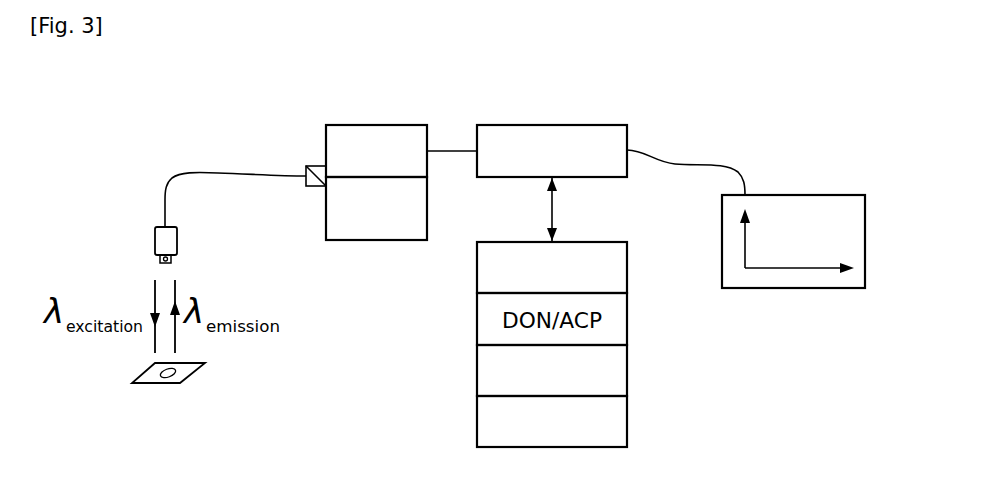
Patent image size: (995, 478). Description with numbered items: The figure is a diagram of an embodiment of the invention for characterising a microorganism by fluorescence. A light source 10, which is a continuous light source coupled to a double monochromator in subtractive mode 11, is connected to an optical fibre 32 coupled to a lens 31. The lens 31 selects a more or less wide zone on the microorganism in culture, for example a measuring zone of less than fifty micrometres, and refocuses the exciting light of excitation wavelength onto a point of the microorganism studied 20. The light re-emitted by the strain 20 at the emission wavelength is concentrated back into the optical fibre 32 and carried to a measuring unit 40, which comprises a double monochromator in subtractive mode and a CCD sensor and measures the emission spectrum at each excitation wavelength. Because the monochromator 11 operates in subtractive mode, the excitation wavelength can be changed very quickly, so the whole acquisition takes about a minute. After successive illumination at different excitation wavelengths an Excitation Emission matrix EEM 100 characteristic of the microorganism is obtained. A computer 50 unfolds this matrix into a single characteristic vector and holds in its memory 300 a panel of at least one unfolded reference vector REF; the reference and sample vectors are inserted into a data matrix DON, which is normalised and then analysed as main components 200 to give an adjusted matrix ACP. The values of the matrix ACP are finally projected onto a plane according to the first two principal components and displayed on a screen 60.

The light source 10 is at (362, 241).
The double monochromator in subtractive mode 11 is at (315, 164).
The microorganism studied 20 is at (140, 375).
The lens 31 is at (153, 238).
The optical fibre 32 is at (218, 173).
The measuring unit 40 is at (362, 124).
The computer 50 is at (503, 124).
The screen 60 is at (828, 195).
The Excitation Emission matrix EEM 100 is at (628, 267).
The main components analysis 200 is at (628, 367).
The memory 300 is at (628, 417).